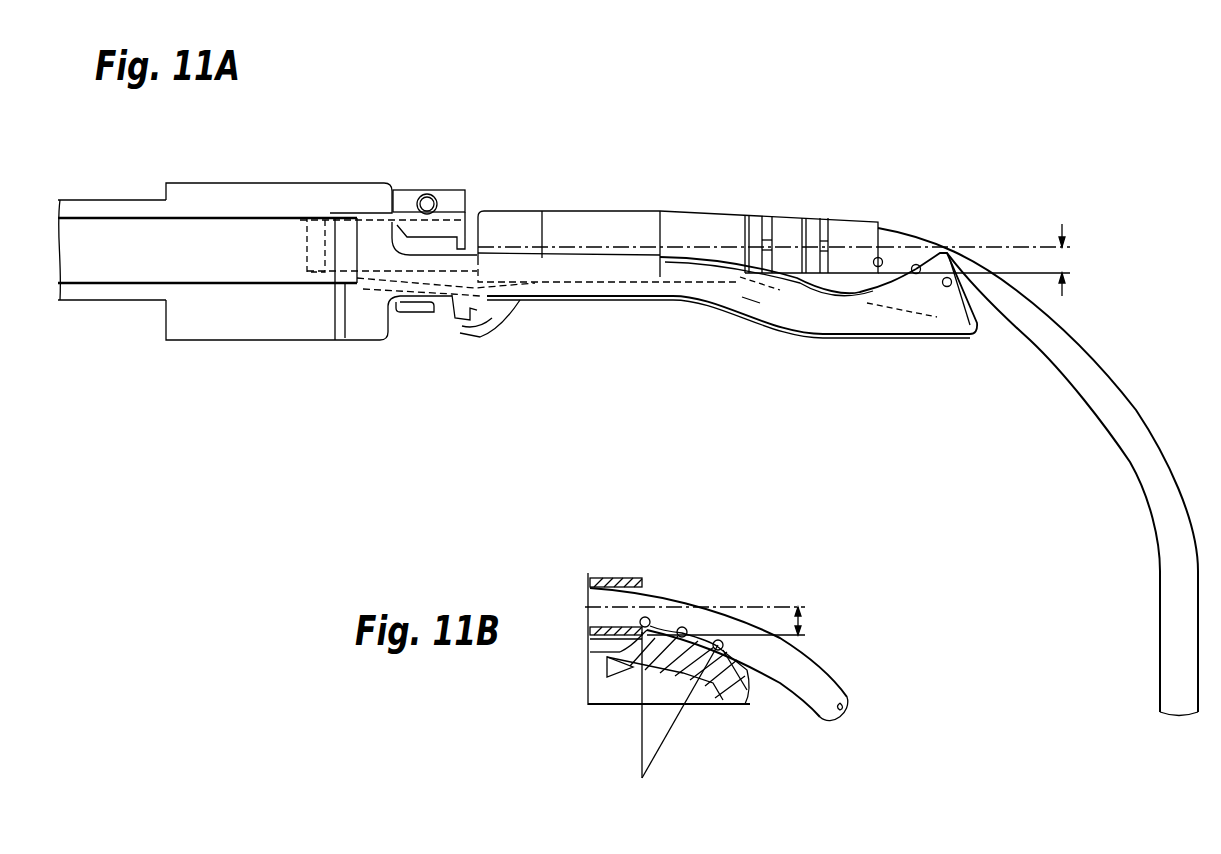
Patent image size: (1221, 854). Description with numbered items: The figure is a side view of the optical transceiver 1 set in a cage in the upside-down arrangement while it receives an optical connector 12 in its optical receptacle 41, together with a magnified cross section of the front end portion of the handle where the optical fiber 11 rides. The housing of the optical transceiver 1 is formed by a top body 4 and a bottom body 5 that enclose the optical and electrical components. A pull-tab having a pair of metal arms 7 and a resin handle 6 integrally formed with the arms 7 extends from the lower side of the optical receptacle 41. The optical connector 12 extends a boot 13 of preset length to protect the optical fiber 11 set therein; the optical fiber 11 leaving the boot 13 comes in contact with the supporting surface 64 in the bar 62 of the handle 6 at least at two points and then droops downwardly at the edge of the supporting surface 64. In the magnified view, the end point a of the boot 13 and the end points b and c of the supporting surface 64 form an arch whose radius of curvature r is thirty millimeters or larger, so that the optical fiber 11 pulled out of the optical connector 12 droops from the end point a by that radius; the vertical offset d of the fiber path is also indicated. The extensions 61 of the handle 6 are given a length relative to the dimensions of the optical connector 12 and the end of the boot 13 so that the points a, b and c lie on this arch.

In FIG. 11A, the optical transceiver 1 is at (776, 140).
In FIG. 11A, the top body 4 is at (257, 336).
In FIG. 11A, the bottom body 5 is at (273, 190).
In FIG. 11A, the handle 6 is at (640, 318).
In FIG. 11A, the arms 7 is at (108, 236).
In FIG. 11A, the optical fiber 11 is at (1077, 340).
In FIG. 11B, the optical fiber 11 is at (817, 672).
In FIG. 11A, the optical connector 12 is at (508, 236).
In FIG. 11A, the boot 13 is at (613, 216).
In FIG. 11B, the boot 13 is at (609, 574).
In FIG. 11A, the optical receptacle 41 is at (438, 195).
In FIG. 11A, the extensions 61 is at (736, 298).
In FIG. 11A, the bar 62 is at (898, 310).
In FIG. 11B, the bar 62 is at (635, 668).
In FIG. 11A, the supporting surface 64 is at (940, 287).
In FIG. 11B, the supporting surface 64 is at (690, 650).
In FIG. 11A, the end point of the boot a is at (876, 266).
In FIG. 11B, the end point of the boot a is at (643, 628).
In FIG. 11A, the end point of the supporting surface b is at (916, 274).
In FIG. 11B, the end point of the supporting surface b is at (681, 638).
In FIG. 11A, the end point of the supporting surface c is at (950, 286).
In FIG. 11B, the end point of the supporting surface c is at (720, 651).
In FIG. 11A, the offset distance d is at (982, 260).
In FIG. 11B, the offset distance d is at (706, 620).
In FIG. 11B, the bend radius r is at (710, 720).